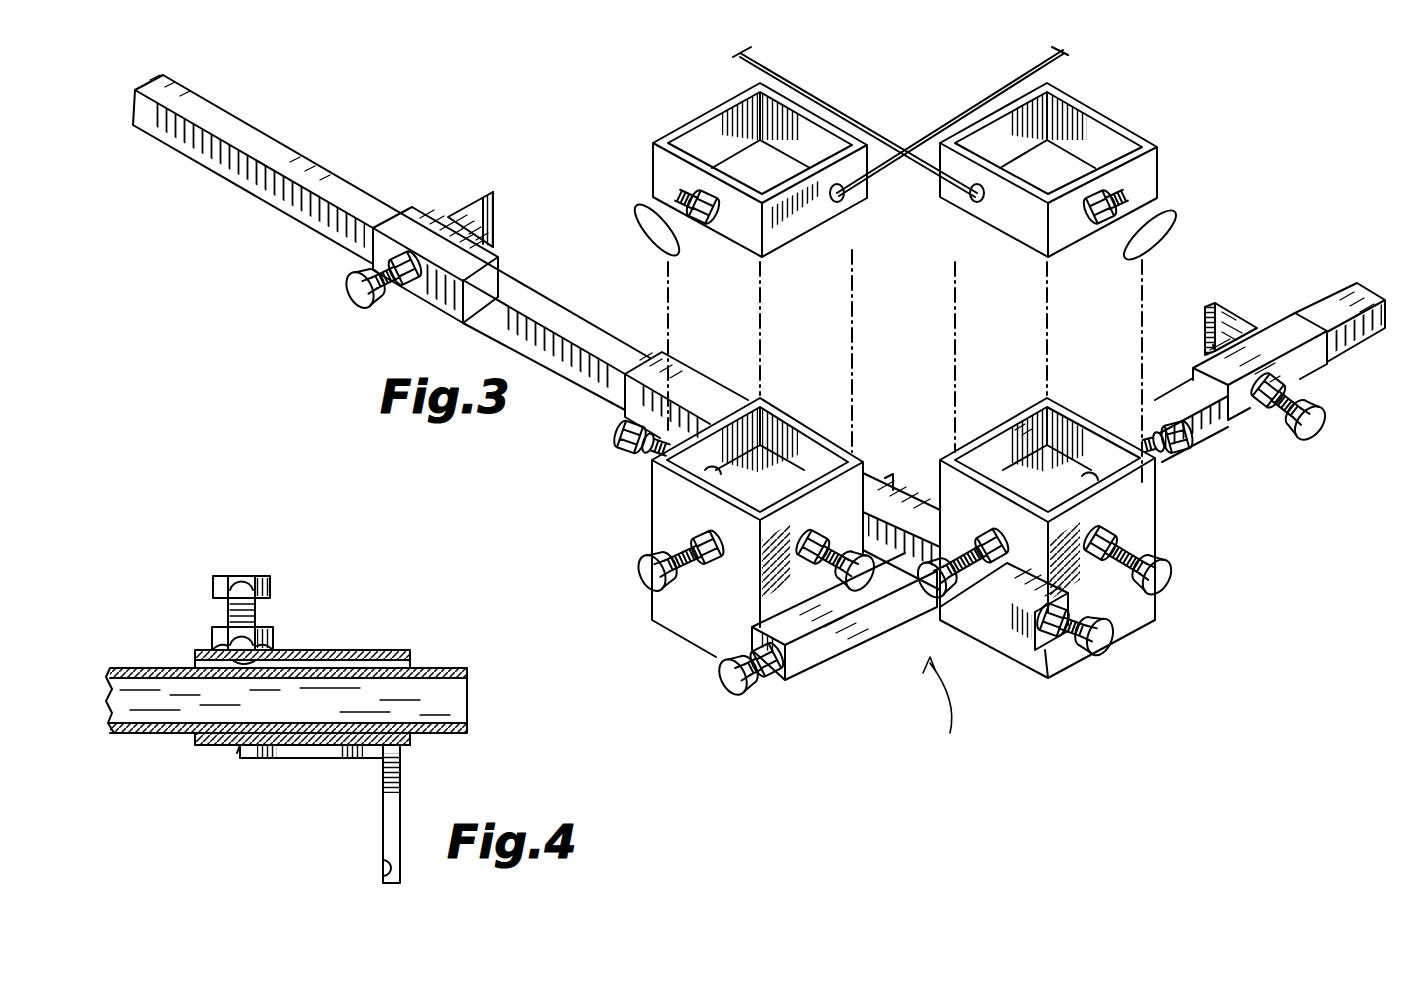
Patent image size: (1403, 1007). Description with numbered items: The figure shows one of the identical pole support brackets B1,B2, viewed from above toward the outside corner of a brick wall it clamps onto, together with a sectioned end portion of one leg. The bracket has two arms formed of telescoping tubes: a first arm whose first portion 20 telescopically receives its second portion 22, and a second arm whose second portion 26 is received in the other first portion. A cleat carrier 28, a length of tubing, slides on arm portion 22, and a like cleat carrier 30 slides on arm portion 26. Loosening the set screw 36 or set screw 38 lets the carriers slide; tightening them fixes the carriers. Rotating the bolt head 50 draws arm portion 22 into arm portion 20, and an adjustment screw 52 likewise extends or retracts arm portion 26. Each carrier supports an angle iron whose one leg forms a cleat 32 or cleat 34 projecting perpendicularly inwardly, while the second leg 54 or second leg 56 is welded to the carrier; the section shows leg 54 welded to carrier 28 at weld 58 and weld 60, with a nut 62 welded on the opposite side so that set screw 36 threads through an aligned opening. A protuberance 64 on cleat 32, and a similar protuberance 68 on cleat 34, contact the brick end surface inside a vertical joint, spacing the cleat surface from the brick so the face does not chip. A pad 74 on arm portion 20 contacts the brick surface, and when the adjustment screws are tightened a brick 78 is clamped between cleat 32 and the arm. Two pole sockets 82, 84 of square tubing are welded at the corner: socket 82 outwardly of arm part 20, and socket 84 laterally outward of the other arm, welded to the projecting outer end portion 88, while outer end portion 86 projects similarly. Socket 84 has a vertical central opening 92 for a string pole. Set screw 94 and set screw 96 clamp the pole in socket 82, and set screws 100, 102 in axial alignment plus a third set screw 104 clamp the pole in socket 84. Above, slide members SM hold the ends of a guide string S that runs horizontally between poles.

In FIG. 3, the first portion of first arm 20 is at (690, 397).
In FIG. 3, the second portion of first arm 22 is at (243, 178).
In FIG. 4, the second portion of first arm 22 is at (440, 667).
In FIG. 3, the second portion of second arm 26 is at (1343, 307).
In FIG. 3, the cleat carrier 28 is at (443, 303).
In FIG. 4, the cleat carrier 28 is at (352, 650).
In FIG. 3, the cleat carrier 30 is at (1305, 372).
In FIG. 3, the cleat 32 is at (455, 210).
In FIG. 4, the cleat 32 is at (395, 803).
In FIG. 3, the cleat 34 is at (1245, 317).
In FIG. 3, the set screw 36 is at (357, 293).
In FIG. 4, the set screw 36 is at (213, 590).
In FIG. 3, the set screw 38 is at (1322, 434).
In FIG. 3, the bolt head 50 is at (1097, 643).
In FIG. 3, the adjustment screw 52 is at (728, 688).
In FIG. 3, the second leg of angle iron 54 is at (497, 238).
In FIG. 4, the second leg of angle iron 54 is at (320, 750).
In FIG. 3, the second leg of angle iron 56 is at (1203, 341).
In FIG. 4, the weld 58 is at (237, 753).
In FIG. 4, the weld 60 is at (403, 748).
In FIG. 4, the nut 62 is at (273, 628).
In FIG. 3, the protuberance 64 is at (497, 213).
In FIG. 4, the protuberance 64 is at (376, 870).
In FIG. 3, the protuberance 68 is at (1207, 327).
In FIG. 3, the pad 74 is at (877, 470).
In FIG. 3, the brick 78 is at (887, 583).
In FIG. 3, the pole socket 82 is at (705, 633).
In FIG. 3, the pole socket 84 is at (1133, 522).
In FIG. 3, the outer end portion of arm part 24 86 is at (833, 647).
In FIG. 3, the outer end portion of arm part 20 88 is at (1020, 632).
In FIG. 3, the vertical central opening 92 is at (1007, 427).
In FIG. 3, the set screw 94 is at (620, 456).
In FIG. 3, the set screw 96 is at (645, 578).
In FIG. 3, the set screw 100 is at (1183, 448).
In FIG. 3, the set screw 102 is at (930, 600).
In FIG. 3, the set screw 104 is at (1163, 585).
In FIG. 3, the guide string S is at (832, 103).
In FIG. 3, the slide member SM is at (703, 130).
In FIG. 3, the pole support brackets B1,B2 is at (999, 712).